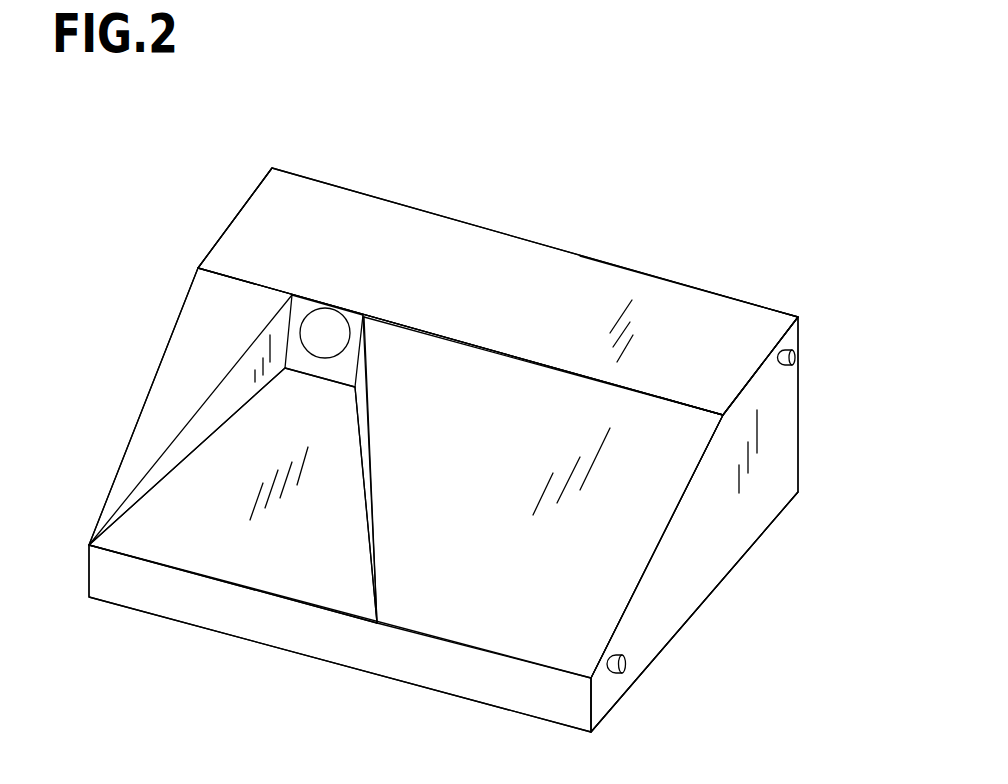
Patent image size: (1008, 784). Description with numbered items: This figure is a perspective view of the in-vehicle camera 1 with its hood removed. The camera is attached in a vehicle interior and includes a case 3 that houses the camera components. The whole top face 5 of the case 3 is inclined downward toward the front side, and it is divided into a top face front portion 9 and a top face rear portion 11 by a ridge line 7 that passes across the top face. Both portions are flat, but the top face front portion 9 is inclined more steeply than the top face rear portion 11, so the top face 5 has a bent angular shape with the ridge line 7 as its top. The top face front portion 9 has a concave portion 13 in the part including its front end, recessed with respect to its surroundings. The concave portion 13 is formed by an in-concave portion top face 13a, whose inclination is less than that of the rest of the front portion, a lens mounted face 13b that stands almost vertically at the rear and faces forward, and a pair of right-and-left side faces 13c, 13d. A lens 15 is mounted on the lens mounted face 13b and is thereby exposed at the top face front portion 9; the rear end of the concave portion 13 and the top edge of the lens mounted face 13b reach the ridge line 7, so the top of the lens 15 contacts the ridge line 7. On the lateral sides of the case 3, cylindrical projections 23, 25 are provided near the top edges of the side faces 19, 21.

The in-vehicle camera 1 is at (748, 110).
The case 3 is at (760, 535).
The top face 5 is at (593, 290).
The ridge line 7 is at (481, 345).
The top face front portion 9 is at (613, 548).
The top face rear portion 11 is at (688, 318).
The concave portion 13 is at (207, 497).
The in-concave portion top face 13a is at (293, 568).
The lens mounted face 13b is at (303, 303).
The side face 13c is at (230, 380).
The side face 13d is at (362, 413).
The lens 15 is at (329, 323).
The side face 19 is at (770, 457).
The side face 21 is at (235, 220).
The cylindrical projection 23 is at (628, 664).
The cylindrical projection 25 is at (799, 354).